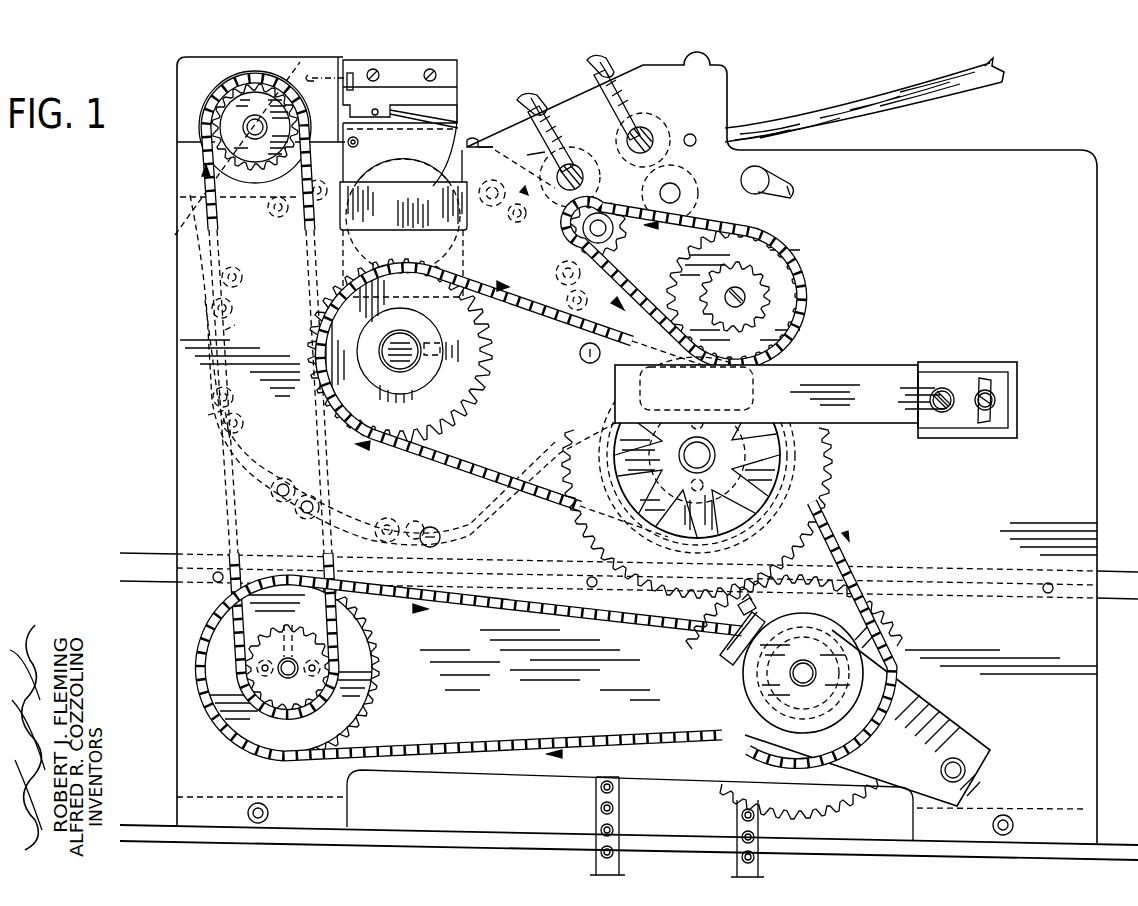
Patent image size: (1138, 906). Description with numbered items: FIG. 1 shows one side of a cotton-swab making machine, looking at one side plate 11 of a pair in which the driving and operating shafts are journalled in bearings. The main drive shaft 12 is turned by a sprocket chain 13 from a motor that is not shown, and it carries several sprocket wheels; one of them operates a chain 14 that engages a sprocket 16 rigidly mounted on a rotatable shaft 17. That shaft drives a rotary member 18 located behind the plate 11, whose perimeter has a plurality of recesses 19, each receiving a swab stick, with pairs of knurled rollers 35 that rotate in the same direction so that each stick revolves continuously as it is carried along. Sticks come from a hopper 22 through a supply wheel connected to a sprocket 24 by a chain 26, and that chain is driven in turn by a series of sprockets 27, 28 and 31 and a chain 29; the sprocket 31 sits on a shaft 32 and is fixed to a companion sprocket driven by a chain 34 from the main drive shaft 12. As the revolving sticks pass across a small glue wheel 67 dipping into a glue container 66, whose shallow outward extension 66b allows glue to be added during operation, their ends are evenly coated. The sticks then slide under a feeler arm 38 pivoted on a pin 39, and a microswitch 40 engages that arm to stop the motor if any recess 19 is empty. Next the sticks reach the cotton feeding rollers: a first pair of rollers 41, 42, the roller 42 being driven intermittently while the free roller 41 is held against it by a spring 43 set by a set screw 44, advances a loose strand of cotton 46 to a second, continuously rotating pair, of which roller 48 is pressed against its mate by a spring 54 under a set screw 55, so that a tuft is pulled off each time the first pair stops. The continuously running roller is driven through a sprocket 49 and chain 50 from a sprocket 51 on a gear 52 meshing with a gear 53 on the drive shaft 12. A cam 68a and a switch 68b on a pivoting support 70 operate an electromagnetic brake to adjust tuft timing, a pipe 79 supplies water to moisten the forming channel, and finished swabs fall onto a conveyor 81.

The side plate 11 is at (1097, 247).
The main drive shaft 12 is at (718, 462).
The sprocket chain 13 is at (597, 785).
The chain 14 is at (468, 462).
The sprocket 16 is at (480, 388).
The rotatable shaft 17 is at (400, 362).
The rotary member 18 is at (255, 478).
The recess 19 is at (292, 511).
The hopper 22 is at (190, 208).
The sprocket 24 is at (240, 115).
The chain 26 is at (208, 232).
The sprocket 27 is at (287, 700).
The sprocket 28 is at (228, 735).
The chain 29 is at (415, 758).
The sprocket 31 is at (735, 722).
The shaft 32 is at (805, 671).
The chain 34 is at (852, 556).
The rollers 35 is at (292, 480).
The feeler arm 38 is at (470, 140).
The pin 39 is at (359, 143).
The microswitch 40 is at (448, 88).
The roller 41 is at (690, 165).
The roller 42 is at (668, 165).
The spring 43 is at (637, 112).
The set screw 44 is at (604, 66).
The strand of cotton 46 is at (836, 112).
The roller 48 is at (584, 148).
The sprocket 49 is at (612, 245).
The chain 50 is at (700, 230).
The sprocket 51 is at (778, 256).
The gear 52 is at (712, 296).
The gear 53 is at (793, 347).
The spring 54 is at (526, 153).
The set screw 55 is at (538, 103).
The glue container 66 is at (392, 229).
The shallow outward extension 66b is at (418, 226).
The wheel 67 is at (440, 165).
The cam 68a is at (748, 522).
The switch 68b is at (758, 402).
The pivoting support 70 is at (868, 370).
The pipe 79 is at (776, 186).
The conveyor 81 is at (1127, 572).